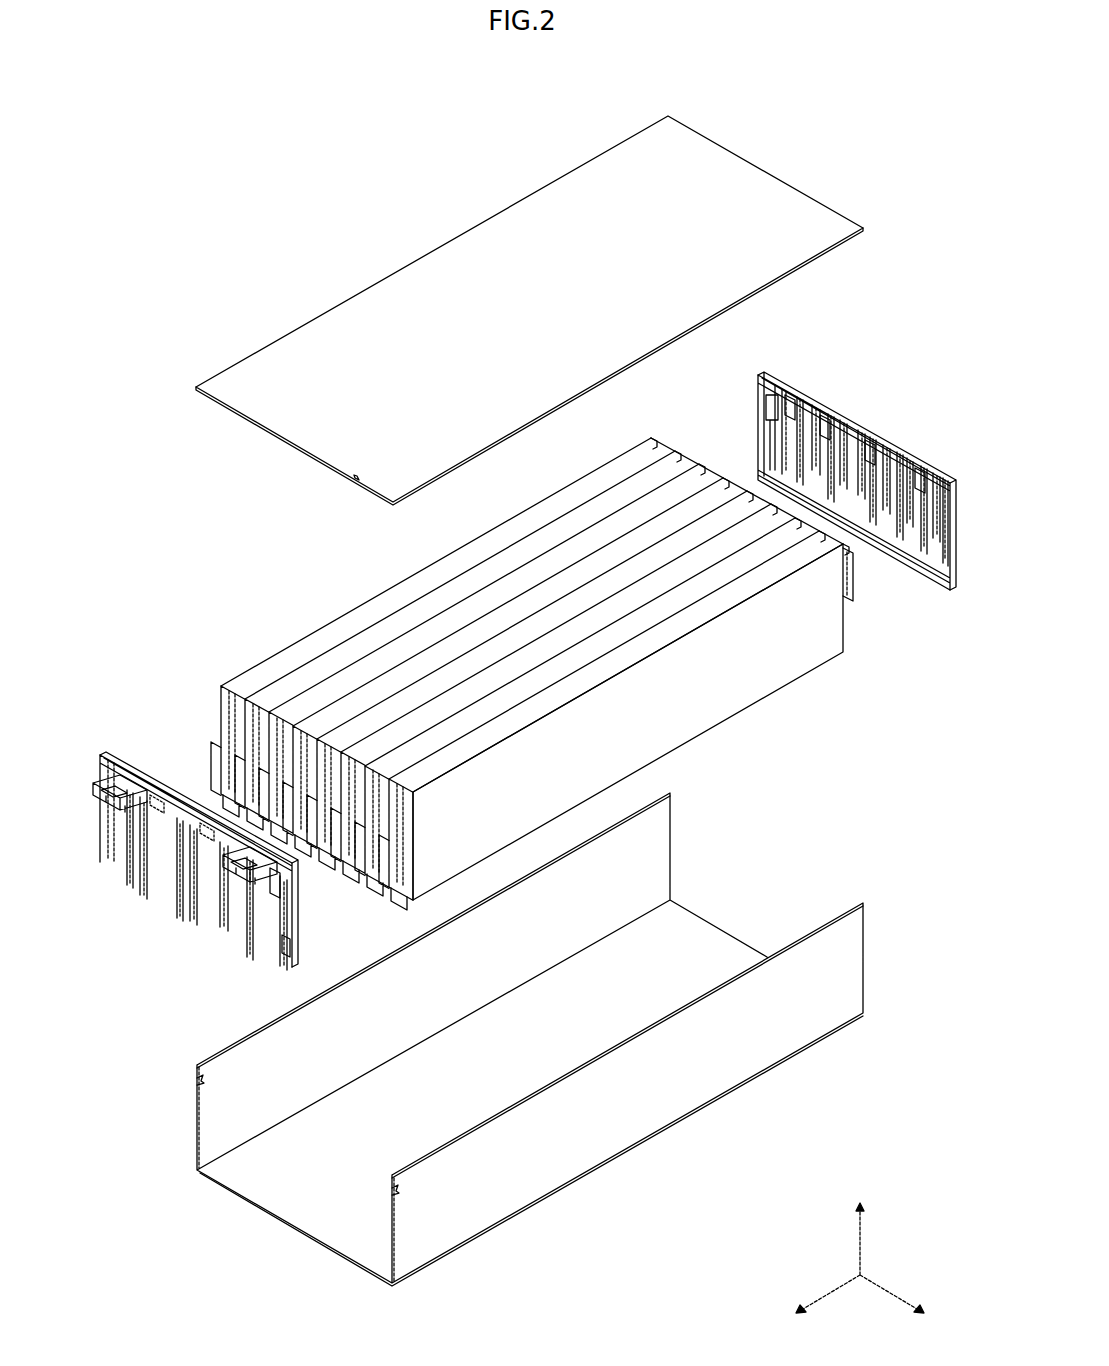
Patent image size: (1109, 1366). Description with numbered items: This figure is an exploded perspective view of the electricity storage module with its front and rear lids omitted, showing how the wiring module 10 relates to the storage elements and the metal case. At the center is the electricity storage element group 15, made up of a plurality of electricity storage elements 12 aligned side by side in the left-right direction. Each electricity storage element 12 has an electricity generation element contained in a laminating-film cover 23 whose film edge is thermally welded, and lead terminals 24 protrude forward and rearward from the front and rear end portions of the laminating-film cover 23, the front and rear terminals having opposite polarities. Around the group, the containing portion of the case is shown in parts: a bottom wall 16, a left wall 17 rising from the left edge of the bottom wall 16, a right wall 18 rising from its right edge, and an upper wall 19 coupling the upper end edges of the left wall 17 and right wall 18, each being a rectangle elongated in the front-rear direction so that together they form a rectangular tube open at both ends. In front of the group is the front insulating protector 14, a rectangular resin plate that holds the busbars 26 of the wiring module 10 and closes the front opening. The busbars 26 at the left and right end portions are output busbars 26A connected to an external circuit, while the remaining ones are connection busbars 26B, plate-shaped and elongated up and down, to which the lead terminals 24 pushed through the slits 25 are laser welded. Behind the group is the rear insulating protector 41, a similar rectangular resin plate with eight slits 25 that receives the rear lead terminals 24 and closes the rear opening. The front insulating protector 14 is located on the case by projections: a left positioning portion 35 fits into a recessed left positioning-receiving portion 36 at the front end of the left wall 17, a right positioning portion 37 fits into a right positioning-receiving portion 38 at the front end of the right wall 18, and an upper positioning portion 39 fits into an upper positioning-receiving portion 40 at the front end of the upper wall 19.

The wiring module 10 is at (108, 722).
The electricity storage element 12 is at (640, 600).
The front insulating protector 14 is at (531, 677).
The electricity storage element group 15 is at (532, 674).
The bottom wall 16 is at (485, 1041).
The left wall 17 is at (400, 1240).
The right wall 18 is at (192, 1135).
The upper wall 19 is at (529, 310).
The laminating-film cover 23 is at (755, 670).
The lead terminal 24 is at (215, 745).
The slit 25 is at (790, 395).
The busbar 26 is at (537, 677).
The output busbar 26A is at (95, 828).
The connection busbar 26B is at (176, 885).
The left positioning portion 35 is at (300, 920).
The left positioning-receiving portion 36 is at (395, 1190).
The right positioning portion 37 is at (95, 770).
The right positioning-receiving portion 38 is at (195, 1088).
The upper positioning portion 39 is at (300, 850).
The upper positioning-receiving portion 40 is at (358, 480).
The rear insulating protector 41 is at (857, 444).